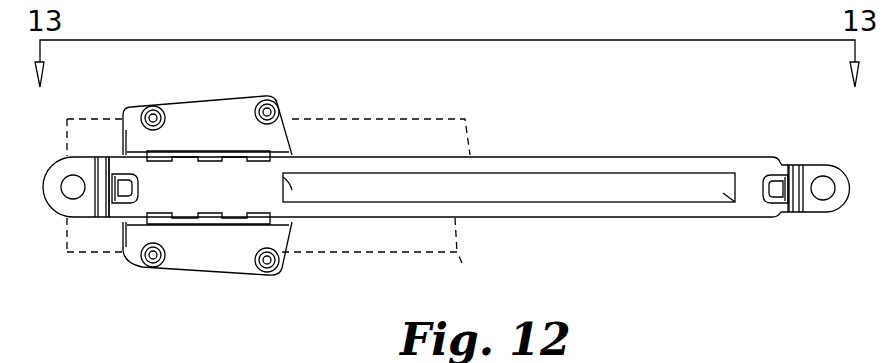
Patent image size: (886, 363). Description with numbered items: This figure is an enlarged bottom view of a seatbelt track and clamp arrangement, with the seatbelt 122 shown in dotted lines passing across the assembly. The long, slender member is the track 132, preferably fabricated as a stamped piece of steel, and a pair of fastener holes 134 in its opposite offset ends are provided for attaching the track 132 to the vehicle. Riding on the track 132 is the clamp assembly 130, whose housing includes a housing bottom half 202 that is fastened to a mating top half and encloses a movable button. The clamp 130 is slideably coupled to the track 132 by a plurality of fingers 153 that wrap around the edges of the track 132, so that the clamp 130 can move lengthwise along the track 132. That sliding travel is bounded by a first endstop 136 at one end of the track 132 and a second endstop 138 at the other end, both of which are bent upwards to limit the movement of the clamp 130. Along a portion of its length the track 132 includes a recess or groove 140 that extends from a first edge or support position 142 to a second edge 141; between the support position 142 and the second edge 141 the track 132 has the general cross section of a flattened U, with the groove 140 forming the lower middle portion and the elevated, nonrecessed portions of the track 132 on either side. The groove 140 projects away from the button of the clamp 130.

The seatbelt 122 is at (407, 254).
The clamp assembly 130 is at (284, 130).
The track 132 is at (500, 160).
The fastener holes 134 is at (75, 183).
The first endstop 136 is at (126, 195).
The second endstop 138 is at (777, 178).
The groove 140 is at (630, 190).
The second edge 141 is at (726, 201).
The support position 142 is at (285, 180).
The fingers 153 is at (166, 158).
The housing bottom half 202 is at (172, 266).